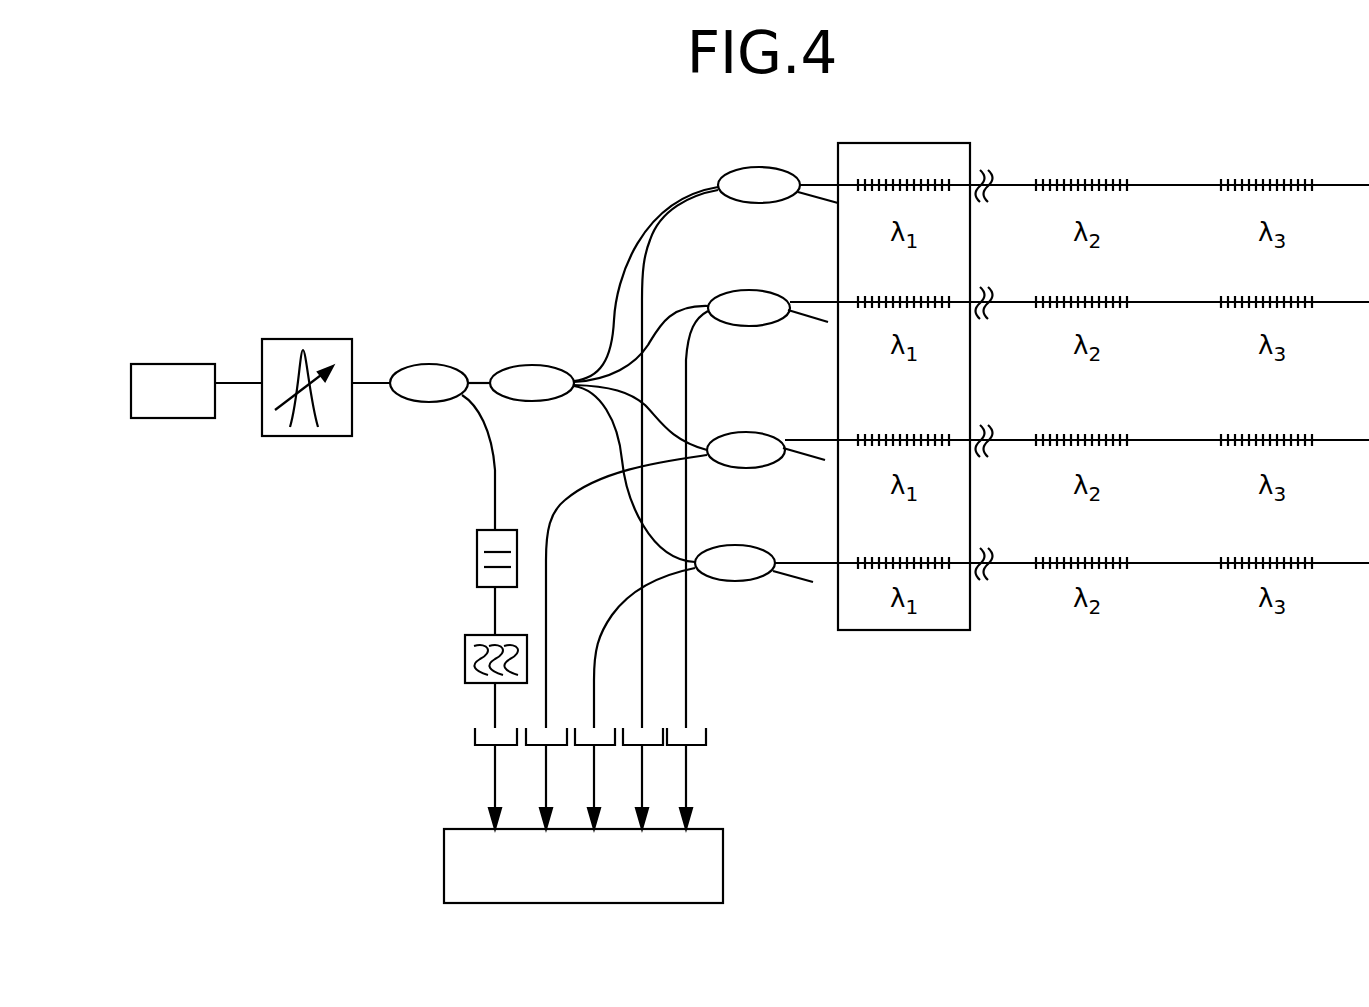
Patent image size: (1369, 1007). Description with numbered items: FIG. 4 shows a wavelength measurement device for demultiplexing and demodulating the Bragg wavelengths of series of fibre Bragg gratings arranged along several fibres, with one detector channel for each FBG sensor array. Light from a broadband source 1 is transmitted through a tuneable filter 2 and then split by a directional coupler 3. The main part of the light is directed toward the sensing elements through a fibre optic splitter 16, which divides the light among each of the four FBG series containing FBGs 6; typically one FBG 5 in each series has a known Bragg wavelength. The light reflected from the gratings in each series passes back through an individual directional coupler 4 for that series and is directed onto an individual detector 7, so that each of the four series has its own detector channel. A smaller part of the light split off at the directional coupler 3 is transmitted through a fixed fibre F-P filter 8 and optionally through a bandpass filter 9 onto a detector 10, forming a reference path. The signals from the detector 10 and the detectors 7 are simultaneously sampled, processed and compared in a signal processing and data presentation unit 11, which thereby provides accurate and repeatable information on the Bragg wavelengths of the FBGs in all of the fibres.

The broadband source 1 is at (173, 373).
The tuneable filter 2 is at (307, 365).
The directional coupler 3 is at (429, 364).
The fibre optic splitter 16 is at (532, 361).
The directional couplers 4 is at (747, 353).
The FBG with known Bragg wavelength 5 is at (904, 386).
The FBGs 6 is at (1081, 354).
The detectors 7 is at (617, 778).
The fixed fibre F-P filter 8 is at (480, 558).
The bandpass filter 9 is at (480, 659).
The detector 10 is at (482, 778).
The signal processing and data presentation unit 11 is at (583, 866).